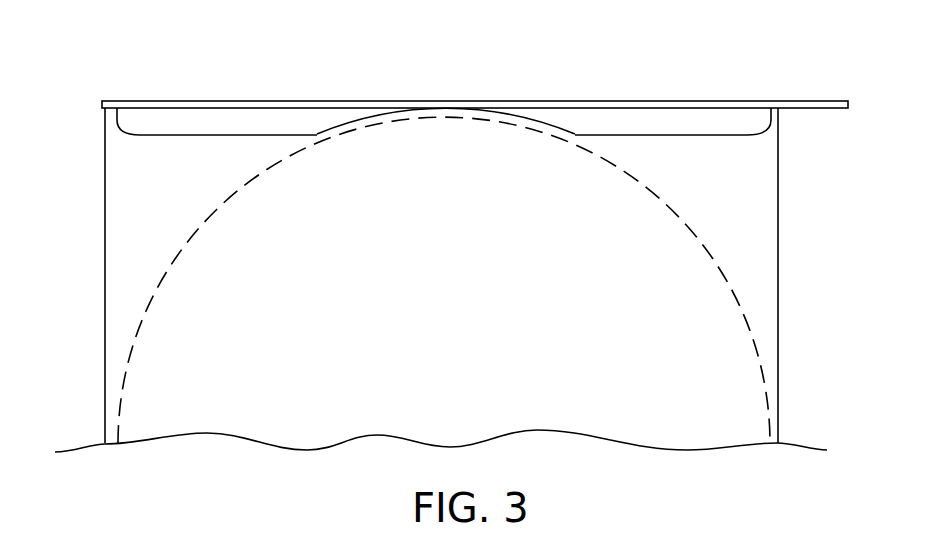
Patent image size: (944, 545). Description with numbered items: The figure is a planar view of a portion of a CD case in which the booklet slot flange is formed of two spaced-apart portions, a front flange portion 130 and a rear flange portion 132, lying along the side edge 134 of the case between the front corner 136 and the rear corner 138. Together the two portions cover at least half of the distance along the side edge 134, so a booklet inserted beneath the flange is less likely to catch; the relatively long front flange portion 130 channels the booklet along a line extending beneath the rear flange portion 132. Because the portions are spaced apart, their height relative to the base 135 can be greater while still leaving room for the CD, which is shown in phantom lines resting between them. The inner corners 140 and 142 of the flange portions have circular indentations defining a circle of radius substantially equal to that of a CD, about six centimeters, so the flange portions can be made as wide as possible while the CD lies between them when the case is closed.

The front flange portion 130 is at (222, 120).
The rear flange portion 132 is at (645, 118).
The side edge 134 is at (315, 102).
The base 135 is at (715, 158).
The front corner 136 is at (103, 109).
The rear corner 138 is at (783, 108).
The inner corner 140 is at (358, 118).
The inner corner 142 is at (533, 110).